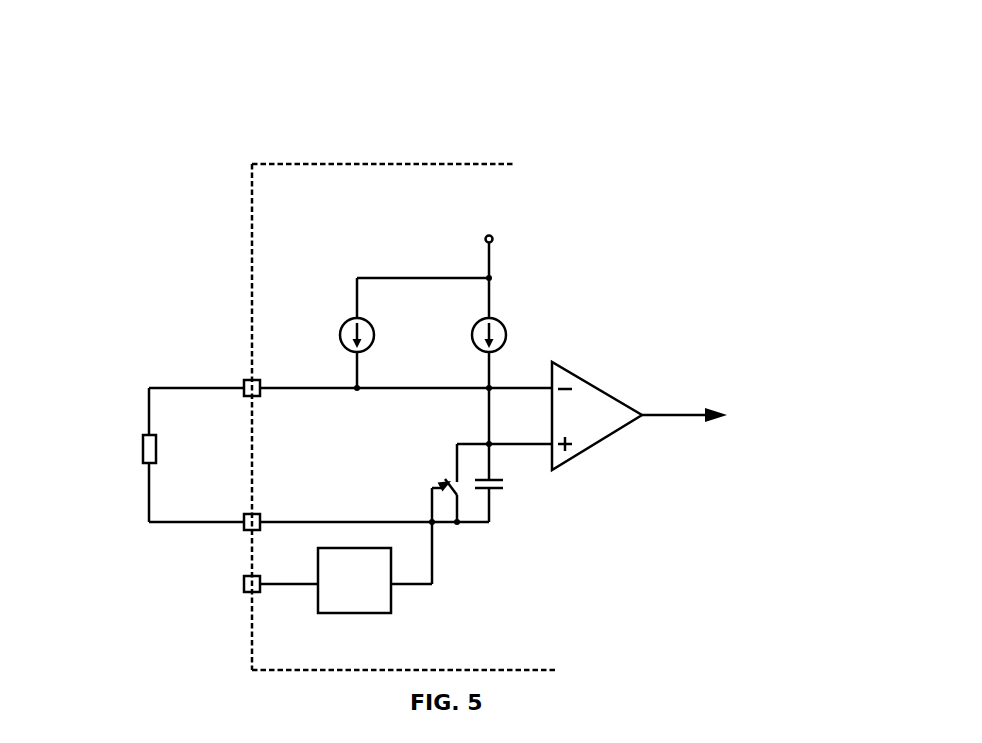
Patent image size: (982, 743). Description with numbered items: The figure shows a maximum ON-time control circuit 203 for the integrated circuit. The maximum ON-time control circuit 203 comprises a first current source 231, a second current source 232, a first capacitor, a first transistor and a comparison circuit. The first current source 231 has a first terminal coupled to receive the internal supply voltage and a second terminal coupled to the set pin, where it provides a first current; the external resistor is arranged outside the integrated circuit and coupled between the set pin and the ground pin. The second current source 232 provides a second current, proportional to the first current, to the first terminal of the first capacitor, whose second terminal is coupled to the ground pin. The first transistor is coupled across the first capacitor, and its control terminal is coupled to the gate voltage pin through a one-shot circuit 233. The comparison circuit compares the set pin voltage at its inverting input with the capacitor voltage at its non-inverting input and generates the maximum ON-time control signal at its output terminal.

The maximum ON-time control circuit 203 is at (416, 102).
The first current source 231 is at (393, 314).
The second current source 232 is at (528, 314).
The one-shot circuit 233 is at (341, 614).